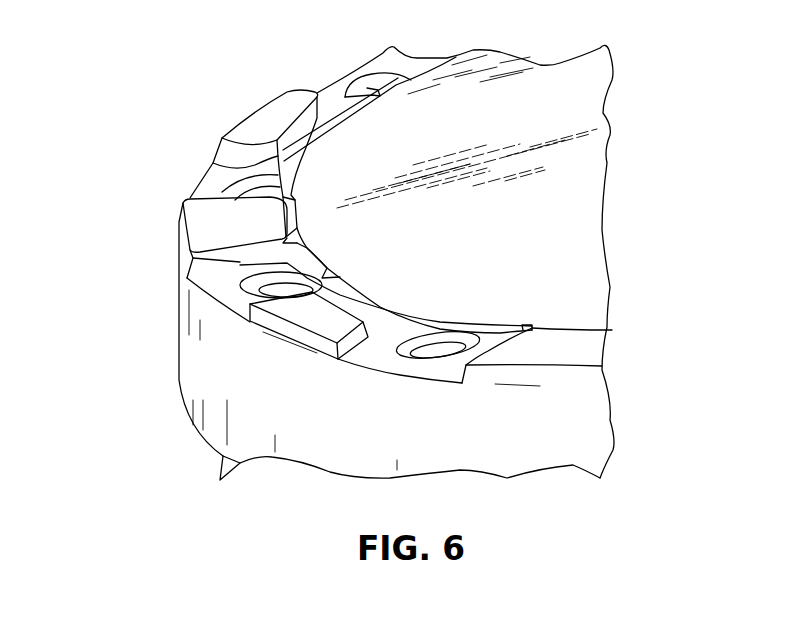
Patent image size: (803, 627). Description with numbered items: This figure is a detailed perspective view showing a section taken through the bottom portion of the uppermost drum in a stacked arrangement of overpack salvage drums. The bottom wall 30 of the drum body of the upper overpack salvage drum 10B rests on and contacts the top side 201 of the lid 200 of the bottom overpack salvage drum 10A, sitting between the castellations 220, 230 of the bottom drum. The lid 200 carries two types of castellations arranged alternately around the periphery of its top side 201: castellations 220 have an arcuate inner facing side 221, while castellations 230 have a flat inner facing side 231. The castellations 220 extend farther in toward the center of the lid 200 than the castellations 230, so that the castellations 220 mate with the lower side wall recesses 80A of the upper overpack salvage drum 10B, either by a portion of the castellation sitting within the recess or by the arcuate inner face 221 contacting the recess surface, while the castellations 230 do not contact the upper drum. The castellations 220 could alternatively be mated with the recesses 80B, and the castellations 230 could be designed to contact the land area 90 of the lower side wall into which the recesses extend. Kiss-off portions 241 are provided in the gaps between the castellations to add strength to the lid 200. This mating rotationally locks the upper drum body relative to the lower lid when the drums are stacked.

The bottom overpack salvage drum 10A is at (150, 349).
The upper overpack salvage drum 10B is at (582, 193).
The bottom wall 30 is at (584, 117).
The lower side wall recesses 80A is at (305, 206).
The lower side wall recesses 80B is at (316, 260).
The lower side wall land areas 90 is at (293, 251).
The lid 200 is at (446, 438).
The top side of the lid 201 is at (382, 322).
The castellations 220 is at (208, 216).
The arcuate inner facing side 221 is at (303, 152).
The castellations 230 is at (263, 120).
The flat inner facing side 231 is at (318, 119).
The kiss-off portions 241 is at (430, 353).